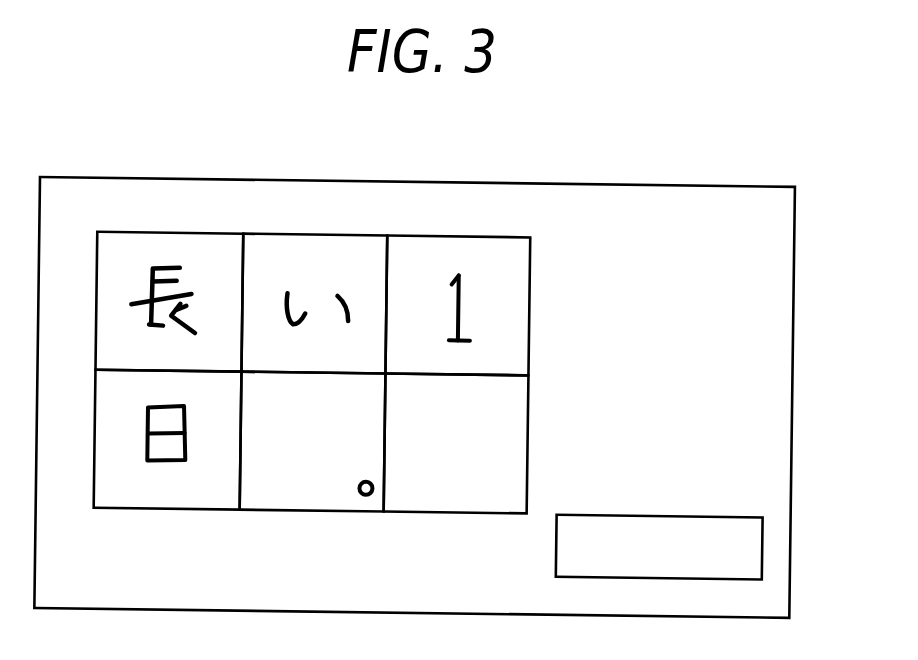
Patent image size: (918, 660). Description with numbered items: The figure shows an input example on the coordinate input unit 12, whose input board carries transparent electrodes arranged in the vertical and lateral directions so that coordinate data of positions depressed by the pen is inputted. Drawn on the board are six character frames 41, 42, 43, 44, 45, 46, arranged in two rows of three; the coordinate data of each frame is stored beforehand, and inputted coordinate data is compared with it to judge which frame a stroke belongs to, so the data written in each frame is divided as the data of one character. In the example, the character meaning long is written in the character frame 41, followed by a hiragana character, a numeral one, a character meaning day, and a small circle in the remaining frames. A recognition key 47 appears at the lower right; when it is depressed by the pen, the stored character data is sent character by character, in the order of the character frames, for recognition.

The coordinate input unit 12 is at (766, 187).
The character frame 41 is at (195, 243).
The character frame 42 is at (347, 248).
The character frame 43 is at (492, 248).
The character frame 44 is at (135, 500).
The character frame 45 is at (277, 500).
The character frame 46 is at (420, 500).
The recognition key 47 is at (735, 516).